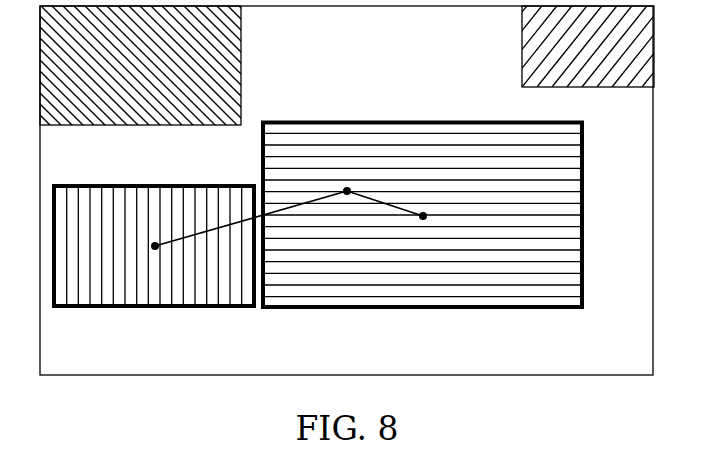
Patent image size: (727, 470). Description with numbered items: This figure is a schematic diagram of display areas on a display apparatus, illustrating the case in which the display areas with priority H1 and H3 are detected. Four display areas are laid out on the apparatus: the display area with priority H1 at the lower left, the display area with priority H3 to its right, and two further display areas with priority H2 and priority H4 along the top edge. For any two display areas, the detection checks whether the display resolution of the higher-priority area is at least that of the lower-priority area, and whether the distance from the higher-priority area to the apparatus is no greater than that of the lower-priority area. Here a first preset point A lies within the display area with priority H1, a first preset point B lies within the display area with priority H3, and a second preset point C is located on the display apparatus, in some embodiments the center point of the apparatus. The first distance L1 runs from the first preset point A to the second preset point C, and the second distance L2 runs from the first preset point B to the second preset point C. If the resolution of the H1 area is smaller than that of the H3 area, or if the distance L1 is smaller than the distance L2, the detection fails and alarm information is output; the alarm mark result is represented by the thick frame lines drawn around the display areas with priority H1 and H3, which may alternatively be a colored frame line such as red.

The display area with priority H1 is at (154, 246).
The display area with priority H2 is at (184, 71).
The display area with priority H3 is at (422, 215).
The display area with priority H4 is at (588, 43).
The first preset point A is at (155, 240).
The first preset point B is at (423, 209).
The second preset point C is at (347, 185).
The first distance L1 is at (251, 218).
The second distance L2 is at (385, 199).